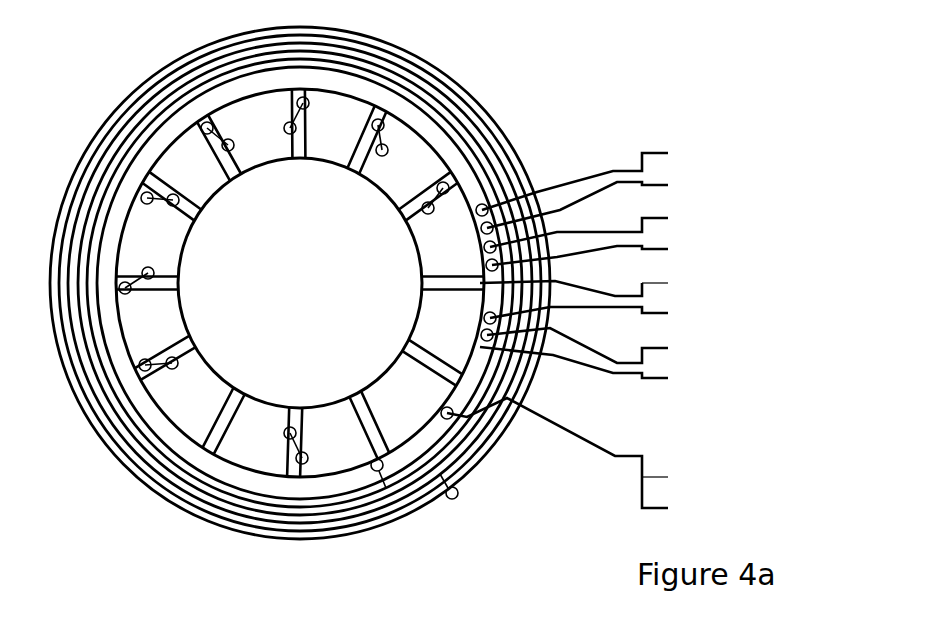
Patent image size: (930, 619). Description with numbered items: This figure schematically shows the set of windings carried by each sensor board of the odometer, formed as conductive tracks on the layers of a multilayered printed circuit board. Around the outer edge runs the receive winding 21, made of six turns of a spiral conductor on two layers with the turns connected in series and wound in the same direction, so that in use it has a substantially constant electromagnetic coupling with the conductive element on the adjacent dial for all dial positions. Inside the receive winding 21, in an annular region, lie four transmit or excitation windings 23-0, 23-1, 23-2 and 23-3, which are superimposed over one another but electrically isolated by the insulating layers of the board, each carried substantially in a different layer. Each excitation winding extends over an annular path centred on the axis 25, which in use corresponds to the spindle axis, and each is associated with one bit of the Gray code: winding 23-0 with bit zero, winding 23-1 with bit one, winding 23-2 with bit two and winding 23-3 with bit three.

The receive winding 21 is at (453, 72).
The axis 25 is at (300, 287).
The excitation winding 23-1 is at (584, 173).
The excitation winding 23-0 is at (596, 231).
The excitation winding 23-2 is at (585, 292).
The excitation winding 23-3 is at (574, 362).